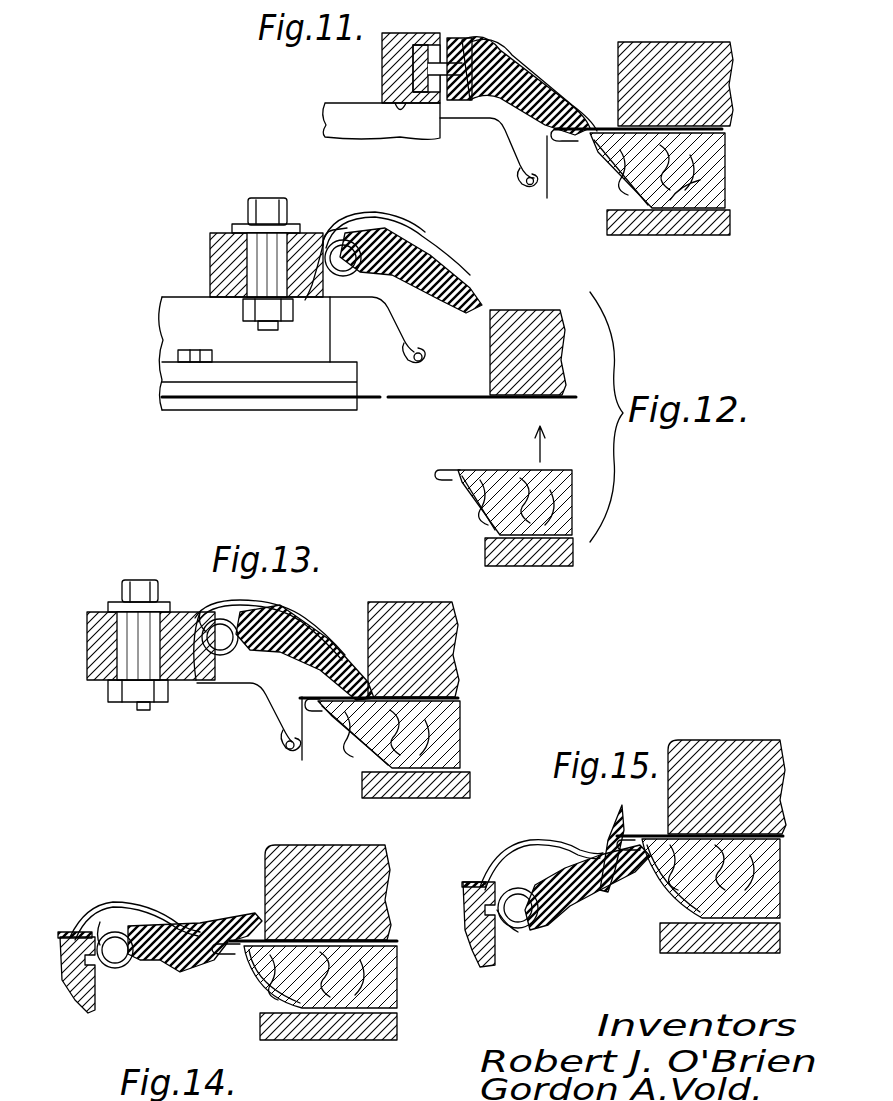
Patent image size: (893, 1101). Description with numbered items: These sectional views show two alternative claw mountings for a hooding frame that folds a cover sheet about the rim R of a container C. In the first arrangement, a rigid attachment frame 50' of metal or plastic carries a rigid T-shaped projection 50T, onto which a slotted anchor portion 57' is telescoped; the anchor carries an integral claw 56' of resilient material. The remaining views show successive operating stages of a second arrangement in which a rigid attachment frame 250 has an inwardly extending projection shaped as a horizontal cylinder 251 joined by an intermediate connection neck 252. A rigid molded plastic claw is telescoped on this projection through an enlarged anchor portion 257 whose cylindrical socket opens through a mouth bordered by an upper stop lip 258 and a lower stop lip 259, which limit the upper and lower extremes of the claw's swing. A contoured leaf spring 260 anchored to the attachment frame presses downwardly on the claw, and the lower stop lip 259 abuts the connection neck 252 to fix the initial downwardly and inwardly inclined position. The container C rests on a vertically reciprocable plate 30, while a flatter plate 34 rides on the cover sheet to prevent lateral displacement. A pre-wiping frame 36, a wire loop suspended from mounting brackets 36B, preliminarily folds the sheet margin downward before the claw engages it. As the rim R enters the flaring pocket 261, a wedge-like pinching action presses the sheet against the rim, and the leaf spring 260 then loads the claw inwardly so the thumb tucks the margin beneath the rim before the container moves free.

In FIG. 11, the vertically reciprocable plate 30 is at (705, 246).
In FIG. 12, the vertically reciprocable plate 30 is at (570, 576).
In FIG. 13, the vertically reciprocable plate 30 is at (428, 804).
In FIG. 14, the vertically reciprocable plate 30 is at (302, 1046).
In FIG. 15, the vertically reciprocable plate 30 is at (704, 960).
In FIG. 11, the flatter plate 34 is at (716, 90).
In FIG. 12, the flatter plate 34 is at (546, 355).
In FIG. 13, the flatter plate 34 is at (435, 655).
In FIG. 14, the flatter plate 34 is at (285, 865).
In FIG. 15, the flatter plate 34 is at (735, 758).
In FIG. 12, the pre-wiping frame 36 is at (412, 360).
In FIG. 13, the pre-wiping frame 36 is at (286, 752).
In FIG. 12, the mounting brackets 36B is at (382, 308).
In FIG. 11, the rigid attachment frame 50' is at (425, 110).
In FIG. 11, the T-shaped projection 50T is at (490, 58).
In FIG. 11, the claw 56' is at (533, 85).
In FIG. 11, the slotted anchor portion 57' is at (480, 51).
In FIG. 12, the rigid attachment frame 250 is at (216, 262).
In FIG. 13, the rigid attachment frame 250 is at (95, 668).
In FIG. 14, the rigid attachment frame 250 is at (82, 1005).
In FIG. 15, the rigid attachment frame 250 is at (488, 950).
In FIG. 12, the horizontal cylinder 251 is at (386, 229).
In FIG. 13, the horizontal cylinder 251 is at (262, 626).
In FIG. 14, the horizontal cylinder 251 is at (165, 926).
In FIG. 15, the horizontal cylinder 251 is at (590, 890).
In FIG. 12, the connection neck 252 is at (320, 270).
In FIG. 13, the connection neck 252 is at (200, 680).
In FIG. 15, the connection neck 252 is at (490, 930).
In FIG. 12, the anchor portion 257 is at (352, 218).
In FIG. 13, the anchor portion 257 is at (228, 612).
In FIG. 14, the anchor portion 257 is at (98, 925).
In FIG. 15, the anchor portion 257 is at (527, 892).
In FIG. 12, the upper stop lip 258 is at (320, 232).
In FIG. 13, the upper stop lip 258 is at (198, 612).
In FIG. 14, the upper stop lip 258 is at (78, 932).
In FIG. 15, the upper stop lip 258 is at (488, 884).
In FIG. 12, the lower stop lip 259 is at (330, 278).
In FIG. 13, the lower stop lip 259 is at (230, 652).
In FIG. 14, the lower stop lip 259 is at (110, 975).
In FIG. 15, the lower stop lip 259 is at (540, 912).
In FIG. 12, the leaf spring 260 is at (410, 228).
In FIG. 13, the leaf spring 260 is at (278, 630).
In FIG. 14, the leaf spring 260 is at (150, 908).
In FIG. 15, the leaf spring 260 is at (540, 845).
In FIG. 12, the pocket 261 is at (450, 328).
In FIG. 11, the rim R is at (578, 157).
In FIG. 12, the rim R is at (442, 488).
In FIG. 13, the rim R is at (324, 722).
In FIG. 11, the container C is at (618, 178).
In FIG. 12, the container C is at (462, 510).
In FIG. 13, the container C is at (389, 734).
In FIG. 14, the container C is at (262, 996).
In FIG. 15, the container C is at (666, 912).